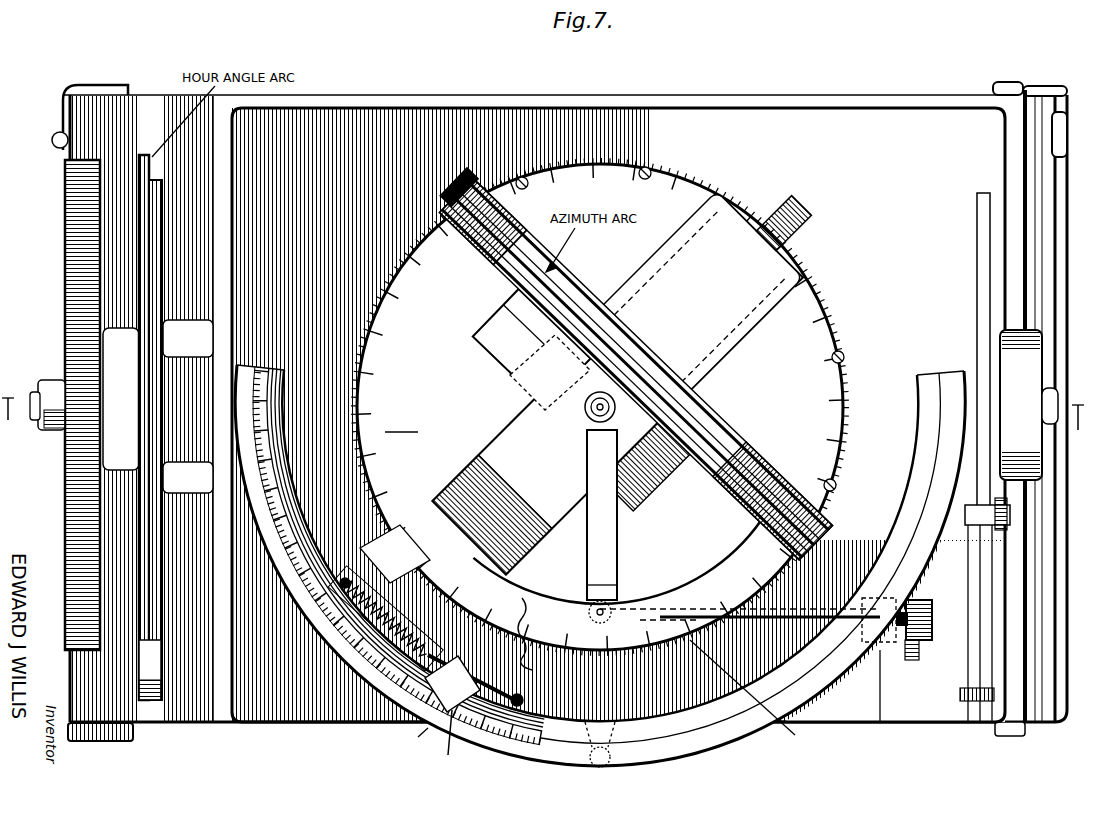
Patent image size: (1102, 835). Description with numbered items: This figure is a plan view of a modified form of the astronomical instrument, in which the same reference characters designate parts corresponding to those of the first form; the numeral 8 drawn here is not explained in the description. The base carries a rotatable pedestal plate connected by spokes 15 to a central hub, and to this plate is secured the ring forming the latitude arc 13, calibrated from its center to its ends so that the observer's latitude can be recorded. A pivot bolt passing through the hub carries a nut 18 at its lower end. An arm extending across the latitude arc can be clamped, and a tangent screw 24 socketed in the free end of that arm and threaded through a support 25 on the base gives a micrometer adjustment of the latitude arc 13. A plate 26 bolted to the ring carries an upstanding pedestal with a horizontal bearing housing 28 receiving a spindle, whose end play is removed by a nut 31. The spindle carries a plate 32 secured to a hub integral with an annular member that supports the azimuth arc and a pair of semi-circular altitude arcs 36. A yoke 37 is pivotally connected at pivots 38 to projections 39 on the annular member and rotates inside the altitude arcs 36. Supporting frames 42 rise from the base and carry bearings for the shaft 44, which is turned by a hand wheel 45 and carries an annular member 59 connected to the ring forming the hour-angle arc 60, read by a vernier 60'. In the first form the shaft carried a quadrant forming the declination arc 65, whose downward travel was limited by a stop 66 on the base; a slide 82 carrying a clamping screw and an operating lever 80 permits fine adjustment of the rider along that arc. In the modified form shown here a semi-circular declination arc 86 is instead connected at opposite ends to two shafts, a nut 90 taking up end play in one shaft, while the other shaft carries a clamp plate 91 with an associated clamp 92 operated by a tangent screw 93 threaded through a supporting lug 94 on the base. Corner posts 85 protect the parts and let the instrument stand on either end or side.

The hand wheel 45 is at (66, 236).
The nut 90 is at (44, 382).
The shaft 8 is at (543, 425).
The annular member 59 is at (158, 330).
The hour-angle arc 60 is at (186, 462).
The vernier 60' is at (149, 700).
The corner posts 85 is at (104, 727).
The semi-circular declination arc 86 is at (930, 445).
The declination arc 65 is at (508, 745).
The slide 82 is at (445, 743).
The stop 66 is at (608, 762).
The plate 26 is at (600, 407).
The horizontal bearing housing 28 is at (611, 382).
The yoke 37 is at (542, 512).
The nut 31 is at (776, 214).
The altitude arcs 36 is at (645, 495).
The spokes 15 is at (500, 335).
The latitude arc 13 is at (790, 600).
The plate 32 is at (592, 485).
The projections 39 is at (566, 402).
The pivots 38 is at (604, 398).
The tangent screw 24 is at (905, 642).
The support 25 is at (880, 655).
The tangent screw 93 is at (920, 652).
The supporting lug 94 is at (958, 694).
The clamp plate 91 is at (977, 263).
The clamp 92 is at (1008, 518).
The supporting frames 42 is at (366, 606).
The nut 18 is at (474, 683).
The shaft 44 is at (395, 554).
The operating lever 80 is at (528, 634).